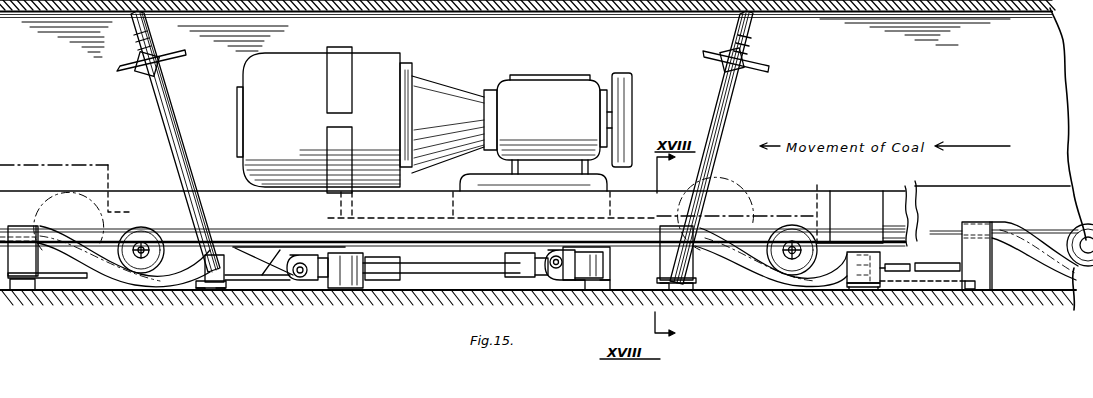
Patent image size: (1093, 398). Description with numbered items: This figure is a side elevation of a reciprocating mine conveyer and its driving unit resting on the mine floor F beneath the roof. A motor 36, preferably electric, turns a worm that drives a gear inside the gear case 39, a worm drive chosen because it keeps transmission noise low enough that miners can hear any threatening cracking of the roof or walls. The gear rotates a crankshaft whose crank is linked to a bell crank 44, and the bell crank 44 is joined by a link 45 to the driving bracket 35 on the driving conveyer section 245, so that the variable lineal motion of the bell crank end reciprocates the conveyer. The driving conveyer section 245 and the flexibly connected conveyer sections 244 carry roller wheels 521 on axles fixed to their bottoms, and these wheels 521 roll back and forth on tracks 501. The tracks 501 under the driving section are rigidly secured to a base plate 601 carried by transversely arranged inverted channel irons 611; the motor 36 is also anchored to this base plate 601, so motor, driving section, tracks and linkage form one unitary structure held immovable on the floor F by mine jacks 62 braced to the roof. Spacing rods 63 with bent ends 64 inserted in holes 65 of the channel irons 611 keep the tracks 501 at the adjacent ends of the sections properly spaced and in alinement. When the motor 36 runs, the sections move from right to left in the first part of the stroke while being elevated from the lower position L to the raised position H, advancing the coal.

The driving bracket 35 is at (285, 252).
The motor 36 is at (291, 64).
The gear case 39 is at (572, 84).
The bell crank 44 is at (612, 268).
The link 45 is at (442, 268).
The mine jack 62 is at (168, 138).
The spacing rod 63 is at (896, 266).
The bent end 64 is at (880, 290).
The hole 65 is at (922, 282).
The conveyer section 244 is at (1030, 190).
The driving conveyer section 245 is at (27, 170).
The track 501 is at (148, 290).
The roller wheel 521 is at (146, 232).
The base plate 601 is at (268, 290).
The channel iron 611 is at (32, 290).
The elevated position H is at (89, 168).
The lower position L is at (128, 194).
The mine floor F is at (437, 290).